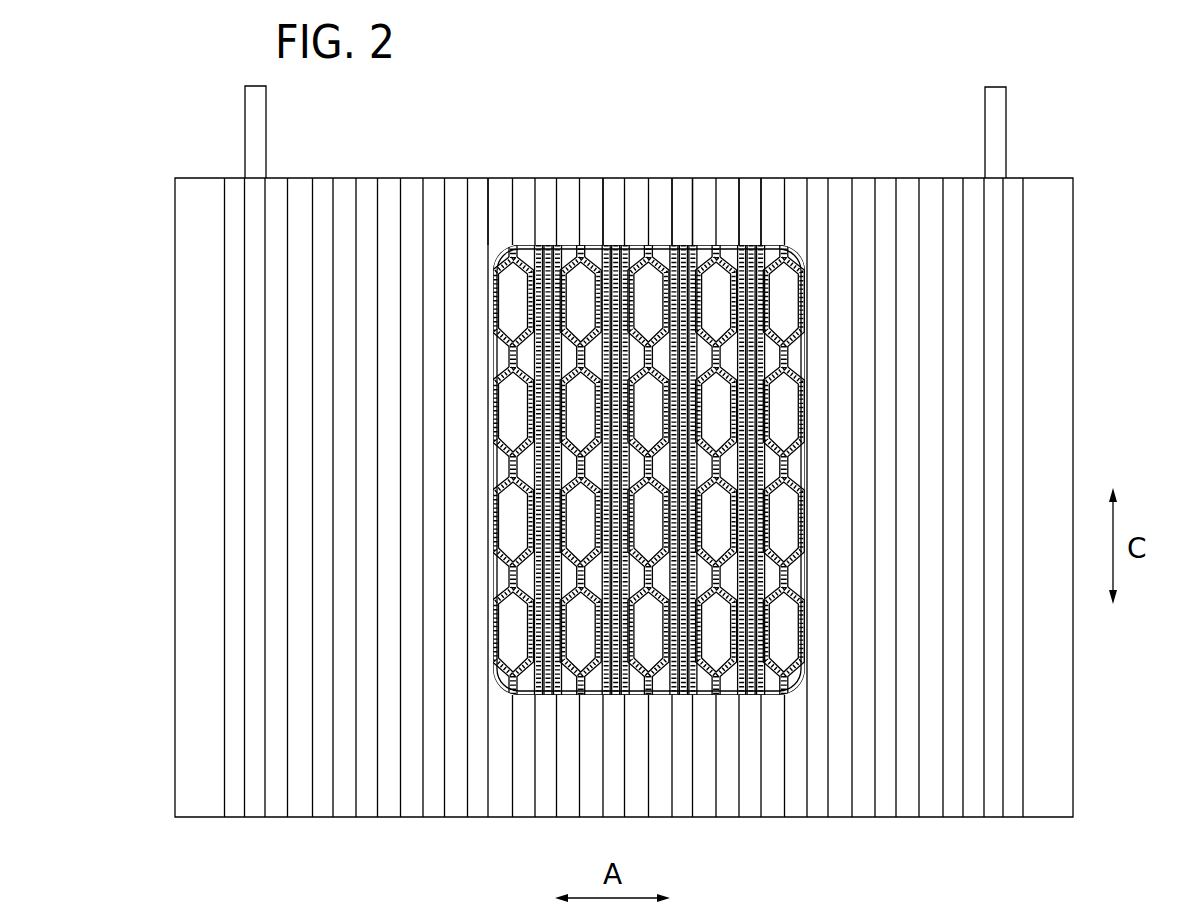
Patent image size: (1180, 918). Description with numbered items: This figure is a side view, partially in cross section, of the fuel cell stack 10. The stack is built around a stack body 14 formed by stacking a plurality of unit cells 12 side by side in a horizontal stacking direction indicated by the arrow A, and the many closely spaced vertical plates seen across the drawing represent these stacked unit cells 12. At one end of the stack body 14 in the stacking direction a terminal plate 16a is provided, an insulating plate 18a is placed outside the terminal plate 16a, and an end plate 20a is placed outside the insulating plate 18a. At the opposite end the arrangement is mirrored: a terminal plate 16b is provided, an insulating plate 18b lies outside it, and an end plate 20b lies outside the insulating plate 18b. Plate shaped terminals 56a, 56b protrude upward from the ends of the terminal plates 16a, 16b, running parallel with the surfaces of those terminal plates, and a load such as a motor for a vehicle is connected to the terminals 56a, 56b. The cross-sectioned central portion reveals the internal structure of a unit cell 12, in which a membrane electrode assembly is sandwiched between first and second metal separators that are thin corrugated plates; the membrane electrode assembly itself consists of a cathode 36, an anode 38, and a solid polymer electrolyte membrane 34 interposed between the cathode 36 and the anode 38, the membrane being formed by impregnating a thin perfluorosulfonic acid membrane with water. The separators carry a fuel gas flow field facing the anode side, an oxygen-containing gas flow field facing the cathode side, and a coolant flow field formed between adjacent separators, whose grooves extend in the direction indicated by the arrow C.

The fuel cell stack 10 is at (400, 125).
The unit cell 12 is at (600, 114).
The stack body 14 is at (782, 89).
The terminal plate 16a is at (253, 556).
The terminal plate 16b is at (993, 393).
The insulating plate 18a is at (232, 508).
The insulating plate 18b is at (1017, 346).
The end plate 20a is at (198, 466).
The end plate 20b is at (1050, 305).
The solid polymer electrolyte membrane 34 is at (547, 495).
The cathode 36 is at (574, 495).
The anode 38 is at (523, 495).
The terminal 56a is at (260, 127).
The terminal 56b is at (990, 122).